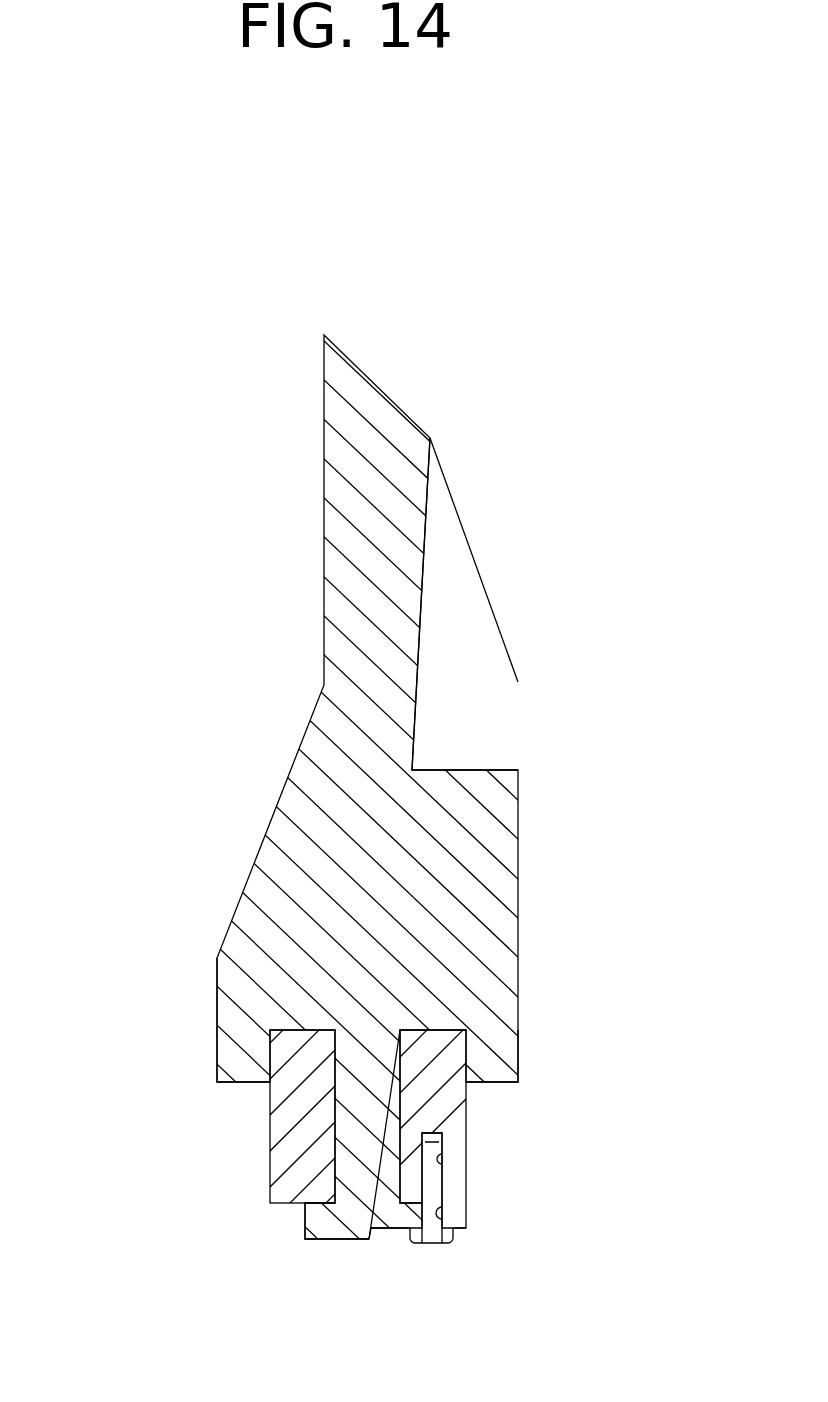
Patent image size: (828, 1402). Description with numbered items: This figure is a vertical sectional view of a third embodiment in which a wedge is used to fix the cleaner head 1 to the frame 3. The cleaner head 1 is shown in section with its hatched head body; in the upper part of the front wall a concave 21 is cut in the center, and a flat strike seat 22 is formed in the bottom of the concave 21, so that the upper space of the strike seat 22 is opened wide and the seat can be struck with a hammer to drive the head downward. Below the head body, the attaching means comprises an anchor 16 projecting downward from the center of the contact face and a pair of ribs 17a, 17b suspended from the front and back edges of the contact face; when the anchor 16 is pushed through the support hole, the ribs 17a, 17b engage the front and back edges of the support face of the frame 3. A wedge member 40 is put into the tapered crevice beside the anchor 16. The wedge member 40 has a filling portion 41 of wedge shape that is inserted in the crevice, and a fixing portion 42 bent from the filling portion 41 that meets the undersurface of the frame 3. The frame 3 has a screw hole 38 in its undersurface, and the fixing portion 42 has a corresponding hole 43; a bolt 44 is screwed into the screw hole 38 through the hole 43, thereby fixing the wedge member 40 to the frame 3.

The cleaner head 1 is at (324, 443).
The concave 21 is at (470, 637).
The strike seat 22 is at (482, 768).
The rib 17a is at (518, 1062).
The rib 17b is at (218, 1068).
The frame 3 is at (270, 1165).
The filling portion 41 is at (398, 1118).
The screw hole 38 is at (447, 1166).
The hole 43 is at (447, 1220).
The fixing portion 42 is at (458, 1230).
The anchor 16 is at (335, 1239).
The wedge member 40 is at (388, 1228).
The bolt 44 is at (423, 1245).